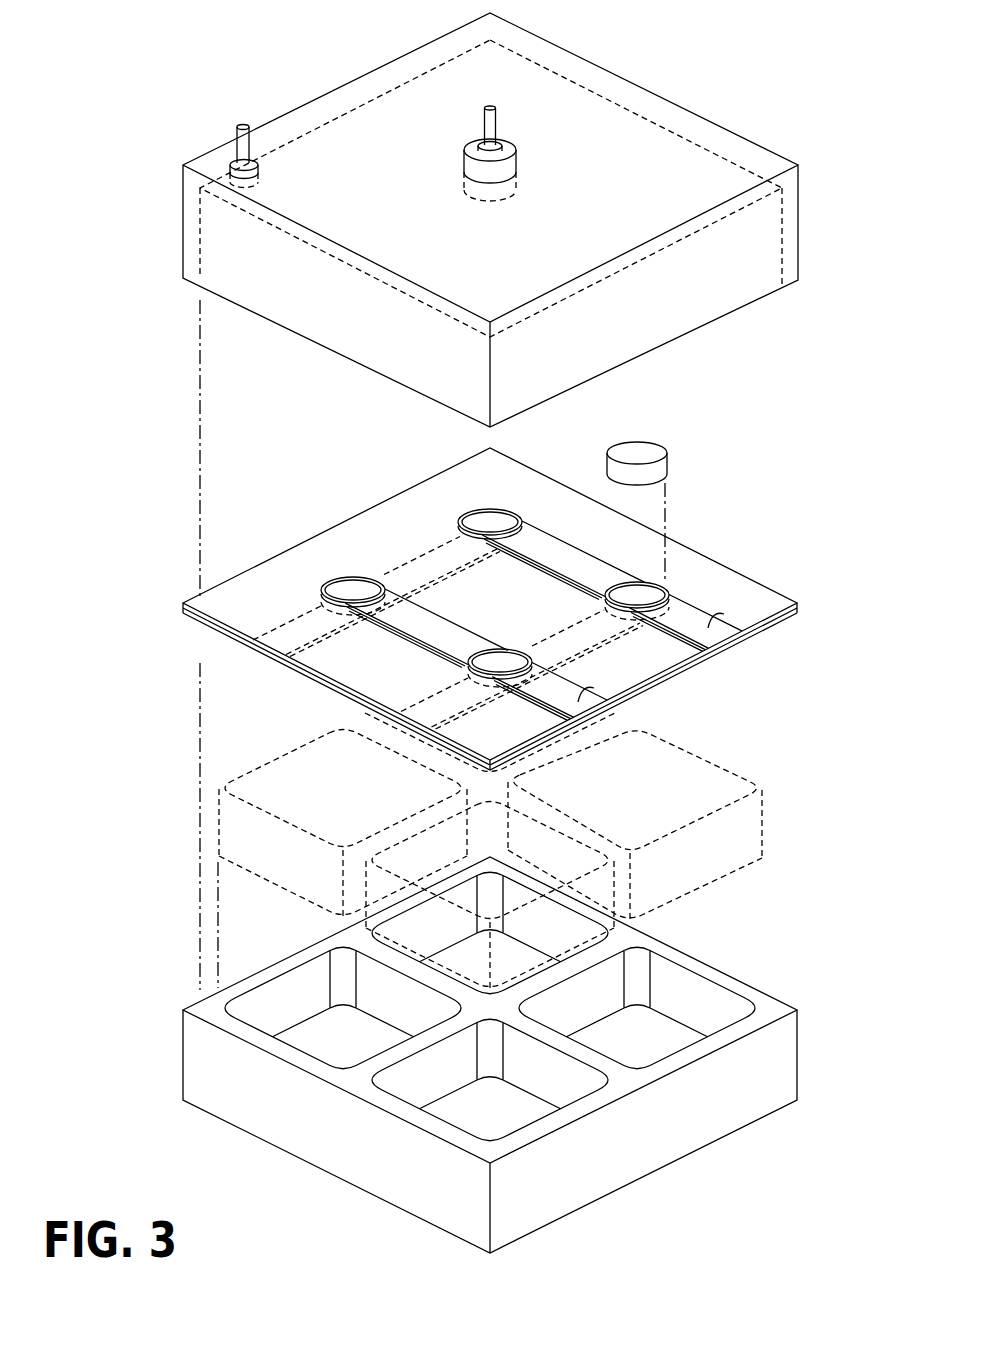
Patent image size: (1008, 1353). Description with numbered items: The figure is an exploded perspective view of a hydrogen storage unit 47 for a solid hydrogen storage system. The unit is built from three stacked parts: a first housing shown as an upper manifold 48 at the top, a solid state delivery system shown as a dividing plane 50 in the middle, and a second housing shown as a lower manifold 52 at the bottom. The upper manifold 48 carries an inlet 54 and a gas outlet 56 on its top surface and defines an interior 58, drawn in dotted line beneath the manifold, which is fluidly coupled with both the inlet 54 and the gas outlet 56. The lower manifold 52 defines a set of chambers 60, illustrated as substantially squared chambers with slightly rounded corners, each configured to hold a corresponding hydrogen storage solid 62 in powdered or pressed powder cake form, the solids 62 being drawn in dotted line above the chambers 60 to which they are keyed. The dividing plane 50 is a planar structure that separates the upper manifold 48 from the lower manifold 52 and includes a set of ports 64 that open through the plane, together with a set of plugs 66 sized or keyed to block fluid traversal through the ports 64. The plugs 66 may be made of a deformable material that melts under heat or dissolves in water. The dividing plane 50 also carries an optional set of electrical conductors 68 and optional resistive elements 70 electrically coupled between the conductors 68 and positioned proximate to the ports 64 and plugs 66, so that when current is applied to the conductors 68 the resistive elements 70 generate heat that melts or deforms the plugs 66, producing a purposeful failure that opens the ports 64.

The hydrogen storage unit 47 is at (317, 75).
The upper manifold 48 is at (800, 199).
The dividing plane 50 is at (741, 570).
The lower manifold 52 is at (778, 1060).
The inlet 54 is at (240, 150).
The gas outlet 56 is at (493, 123).
The interior 58 is at (585, 228).
The set of chambers 60 is at (427, 935).
The hydrogen storage solids 62 is at (300, 793).
The set of ports 64 is at (349, 572).
The set of plugs 66 is at (362, 590).
The electrical conductors 68 is at (720, 613).
The resistive elements 70 is at (315, 593).